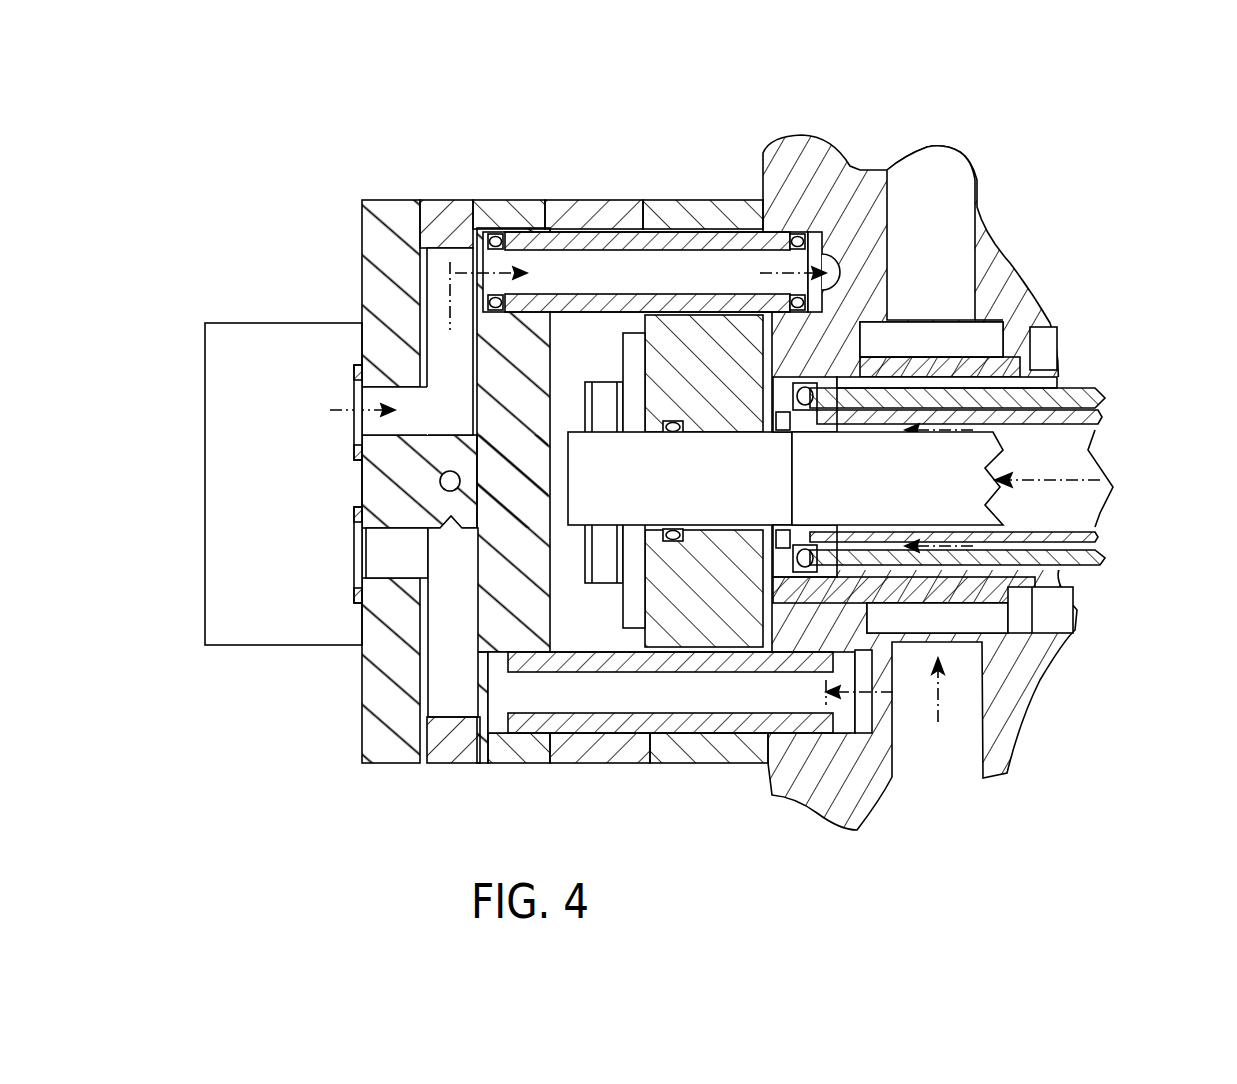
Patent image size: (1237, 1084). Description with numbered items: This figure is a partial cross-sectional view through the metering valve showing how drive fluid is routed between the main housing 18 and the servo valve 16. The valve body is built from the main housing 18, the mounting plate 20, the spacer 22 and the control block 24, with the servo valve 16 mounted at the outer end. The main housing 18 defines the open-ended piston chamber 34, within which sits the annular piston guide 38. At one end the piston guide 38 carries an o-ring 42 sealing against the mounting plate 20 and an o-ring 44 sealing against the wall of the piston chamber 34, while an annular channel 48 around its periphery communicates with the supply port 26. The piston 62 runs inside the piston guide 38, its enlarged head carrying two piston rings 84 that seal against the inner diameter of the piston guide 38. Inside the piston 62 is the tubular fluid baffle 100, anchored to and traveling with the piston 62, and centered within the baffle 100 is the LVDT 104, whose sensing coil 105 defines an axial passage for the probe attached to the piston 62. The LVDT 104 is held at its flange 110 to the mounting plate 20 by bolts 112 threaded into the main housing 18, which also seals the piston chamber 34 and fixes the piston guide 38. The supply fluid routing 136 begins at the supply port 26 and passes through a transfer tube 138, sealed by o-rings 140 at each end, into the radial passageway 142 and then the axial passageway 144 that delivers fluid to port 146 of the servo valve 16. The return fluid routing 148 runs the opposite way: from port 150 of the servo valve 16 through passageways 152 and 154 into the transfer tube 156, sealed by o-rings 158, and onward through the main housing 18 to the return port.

The servo valve 16 is at (288, 647).
The main housing 18 is at (828, 166).
The mounting plate 20 is at (690, 212).
The spacer 22 is at (585, 212).
The control block 24 is at (505, 212).
The supply port 26 is at (955, 754).
The piston chamber 34 is at (1033, 464).
The piston guide 38 is at (1024, 606).
The o-ring 42 is at (827, 330).
The o-ring 44 is at (758, 368).
The annular channel 48 is at (919, 636).
The piston 62 is at (1076, 390).
The piston rings 84 is at (803, 417).
The fluid baffle 100 is at (1105, 414).
The LVDT 104 is at (748, 506).
The sensing coil 105 is at (668, 529).
The flange 110 is at (628, 365).
The bolts 112 is at (608, 560).
The supply fluid routing 136 is at (440, 482).
The transfer tube 138 is at (760, 710).
The o-rings 140 is at (510, 712).
The radial passageway 142 is at (432, 629).
The axial passageway 144 is at (377, 568).
The port 146 is at (358, 535).
The return fluid routing 148 is at (425, 296).
The port 150 is at (358, 432).
The passageway 152 is at (380, 398).
The passageway 154 is at (430, 404).
The transfer tube 156 is at (680, 298).
The o-rings 158 is at (538, 232).